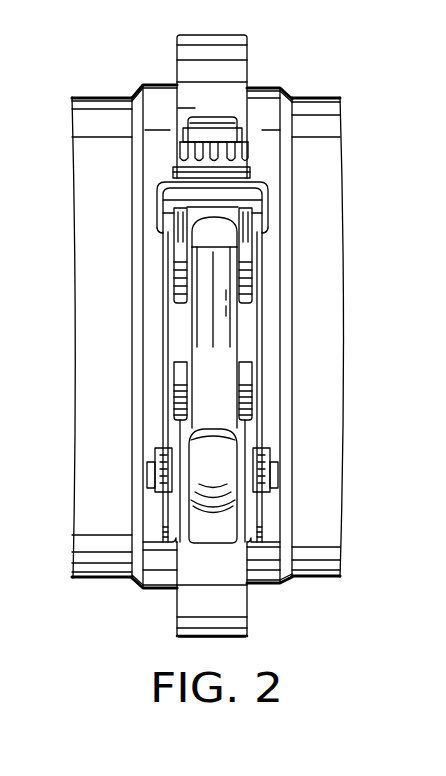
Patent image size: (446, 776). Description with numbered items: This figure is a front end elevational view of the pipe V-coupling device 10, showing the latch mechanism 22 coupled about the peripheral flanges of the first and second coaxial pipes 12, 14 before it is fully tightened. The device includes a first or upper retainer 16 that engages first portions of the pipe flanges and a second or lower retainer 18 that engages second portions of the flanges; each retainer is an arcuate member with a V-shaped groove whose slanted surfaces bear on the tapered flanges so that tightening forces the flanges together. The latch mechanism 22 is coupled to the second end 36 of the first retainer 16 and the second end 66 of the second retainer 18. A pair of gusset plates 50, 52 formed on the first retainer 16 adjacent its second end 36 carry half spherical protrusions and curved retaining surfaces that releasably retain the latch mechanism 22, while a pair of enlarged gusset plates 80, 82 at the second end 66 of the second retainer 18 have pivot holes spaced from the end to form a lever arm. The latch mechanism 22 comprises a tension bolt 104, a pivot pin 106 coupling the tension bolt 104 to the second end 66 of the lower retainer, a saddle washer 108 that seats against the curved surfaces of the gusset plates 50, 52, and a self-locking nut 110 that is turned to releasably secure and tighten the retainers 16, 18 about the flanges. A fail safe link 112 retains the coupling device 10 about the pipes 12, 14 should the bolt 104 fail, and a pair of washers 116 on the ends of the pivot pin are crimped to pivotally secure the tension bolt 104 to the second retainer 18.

The pipe V-coupling device 10 is at (160, 71).
The first pipe 12 is at (93, 96).
The second pipe 14 is at (318, 93).
The first retainer 16 is at (262, 60).
The second retainer 18 is at (266, 616).
The latch mechanism 22 is at (142, 323).
The second end of first retainer 36 is at (250, 317).
The gusset plate 50 is at (176, 243).
The gusset plate 52 is at (262, 229).
The second end of second retainer 66 is at (258, 358).
The gusset plate 80 is at (176, 410).
The gusset plate 82 is at (262, 395).
The tension bolt 104 is at (250, 350).
The pivot pin 106 is at (278, 476).
The saddle washer 108 is at (272, 188).
The self-locking nut 110 is at (270, 156).
The fail safe link 112 is at (266, 256).
The washer 116 is at (266, 512).